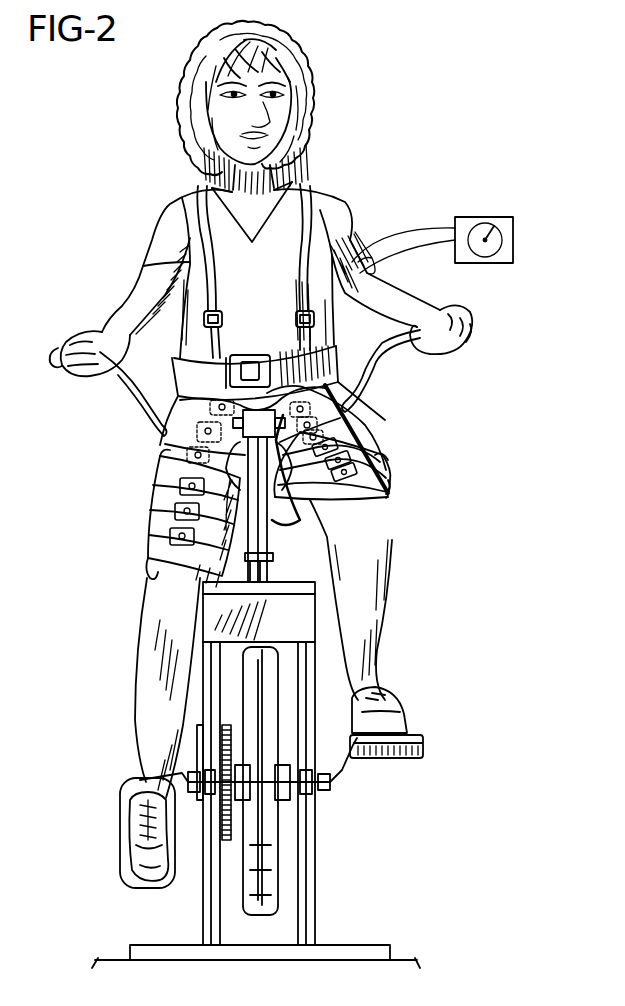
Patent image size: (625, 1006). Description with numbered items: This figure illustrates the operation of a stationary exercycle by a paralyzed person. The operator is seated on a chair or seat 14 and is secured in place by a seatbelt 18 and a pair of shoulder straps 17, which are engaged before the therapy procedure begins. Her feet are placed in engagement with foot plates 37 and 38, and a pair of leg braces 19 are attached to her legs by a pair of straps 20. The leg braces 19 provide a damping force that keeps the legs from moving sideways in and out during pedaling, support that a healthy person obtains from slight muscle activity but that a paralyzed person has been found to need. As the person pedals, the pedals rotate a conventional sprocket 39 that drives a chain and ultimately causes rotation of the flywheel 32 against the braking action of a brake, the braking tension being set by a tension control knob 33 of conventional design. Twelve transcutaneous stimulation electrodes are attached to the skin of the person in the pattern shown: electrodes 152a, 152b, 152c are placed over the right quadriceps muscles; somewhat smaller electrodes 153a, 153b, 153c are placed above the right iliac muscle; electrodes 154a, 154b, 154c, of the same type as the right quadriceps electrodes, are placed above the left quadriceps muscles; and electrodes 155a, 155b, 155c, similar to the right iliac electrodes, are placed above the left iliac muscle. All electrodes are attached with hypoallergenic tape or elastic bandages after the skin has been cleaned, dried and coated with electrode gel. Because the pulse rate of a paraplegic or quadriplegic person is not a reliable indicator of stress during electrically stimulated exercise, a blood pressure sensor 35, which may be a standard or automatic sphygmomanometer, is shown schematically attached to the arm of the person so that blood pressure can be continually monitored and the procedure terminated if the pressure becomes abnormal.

The seat 14 is at (325, 190).
The shoulder straps 17 is at (188, 184).
The seatbelt 18 is at (335, 372).
The leg braces 19 is at (148, 548).
The straps 20 is at (166, 560).
The flywheel 32 is at (272, 876).
The tension control knob 33 is at (250, 553).
The blood pressure sensor 35 is at (513, 234).
The foot plate 37 is at (424, 742).
The foot plate 38 is at (124, 830).
The sprocket 39 is at (226, 845).
The stimulation electrode 152a is at (172, 536).
The stimulation electrode 152b is at (180, 487).
The stimulation electrode 152c is at (176, 512).
The stimulation electrode 153a is at (193, 452).
The stimulation electrode 153b is at (222, 407).
The stimulation electrode 153c is at (208, 431).
The stimulation electrode 154a is at (344, 473).
The stimulation electrode 154b is at (325, 448).
The stimulation electrode 154c is at (338, 461).
The stimulation electrode 155a is at (313, 436).
The stimulation electrode 155b is at (302, 409).
The stimulation electrode 155c is at (307, 424).